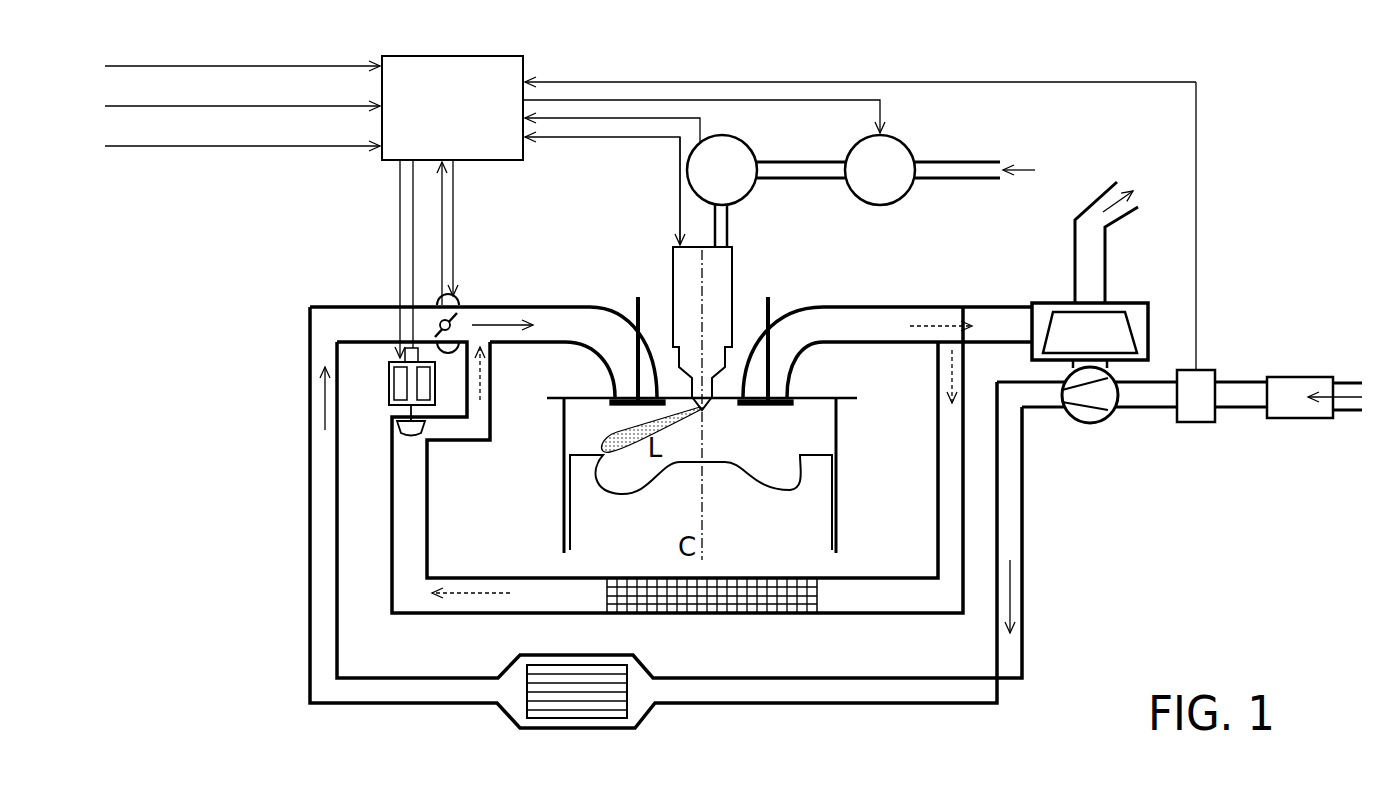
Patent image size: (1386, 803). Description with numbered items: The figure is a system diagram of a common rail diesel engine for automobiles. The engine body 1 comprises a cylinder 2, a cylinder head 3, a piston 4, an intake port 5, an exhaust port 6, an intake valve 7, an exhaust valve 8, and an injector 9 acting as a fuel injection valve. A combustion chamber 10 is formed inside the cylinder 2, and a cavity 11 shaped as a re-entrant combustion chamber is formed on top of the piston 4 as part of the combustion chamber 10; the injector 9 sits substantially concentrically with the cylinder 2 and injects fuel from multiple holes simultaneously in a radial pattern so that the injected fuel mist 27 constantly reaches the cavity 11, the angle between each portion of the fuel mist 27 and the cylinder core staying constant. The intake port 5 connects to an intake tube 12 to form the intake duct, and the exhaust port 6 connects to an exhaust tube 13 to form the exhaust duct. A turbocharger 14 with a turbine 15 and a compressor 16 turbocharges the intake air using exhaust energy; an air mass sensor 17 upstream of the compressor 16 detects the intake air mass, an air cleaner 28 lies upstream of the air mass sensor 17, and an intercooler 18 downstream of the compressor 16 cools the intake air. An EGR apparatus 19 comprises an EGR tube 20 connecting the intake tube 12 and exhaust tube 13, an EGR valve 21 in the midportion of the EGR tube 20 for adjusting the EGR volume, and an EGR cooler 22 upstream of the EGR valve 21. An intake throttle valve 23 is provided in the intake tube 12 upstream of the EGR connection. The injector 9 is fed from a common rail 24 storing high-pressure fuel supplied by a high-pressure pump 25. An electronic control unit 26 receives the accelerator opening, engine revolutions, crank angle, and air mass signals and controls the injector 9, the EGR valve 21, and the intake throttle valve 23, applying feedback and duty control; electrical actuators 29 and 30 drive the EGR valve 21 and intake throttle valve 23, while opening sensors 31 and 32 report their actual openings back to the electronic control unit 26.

The engine body 1 is at (543, 498).
The cylinder 2 is at (832, 437).
The cylinder head 3 is at (822, 401).
The piston 4 is at (806, 530).
The intake port 5 is at (594, 334).
The exhaust port 6 is at (783, 358).
The intake valve 7 is at (632, 305).
The exhaust valve 8 is at (775, 310).
The injector 9 is at (684, 278).
The combustion chamber 10 is at (584, 428).
The cavity 11 is at (750, 476).
The intake tube 12 is at (308, 545).
The exhaust tube 13 is at (980, 306).
The turbocharger 14 is at (1053, 290).
The turbine 15 is at (1105, 325).
The compressor 16 is at (1093, 400).
The air mass sensor 17 is at (1198, 424).
The intercooler 18 is at (566, 676).
The EGR apparatus 19 is at (380, 416).
The EGR tube 20 is at (870, 616).
The EGR valve 21 is at (389, 398).
The EGR cooler 22 is at (712, 597).
The intake throttle valve 23 is at (462, 305).
The common rail 24 is at (751, 192).
The high-pressure pump 25 is at (910, 192).
The electronic control unit 26 is at (477, 56).
The fuel spray 27 is at (618, 488).
The air cleaner 28 is at (1302, 420).
The electrical actuator 29 is at (393, 378).
The electrical actuator 30 is at (455, 300).
The opening sensor 31 is at (408, 352).
The opening sensor 32 is at (448, 347).